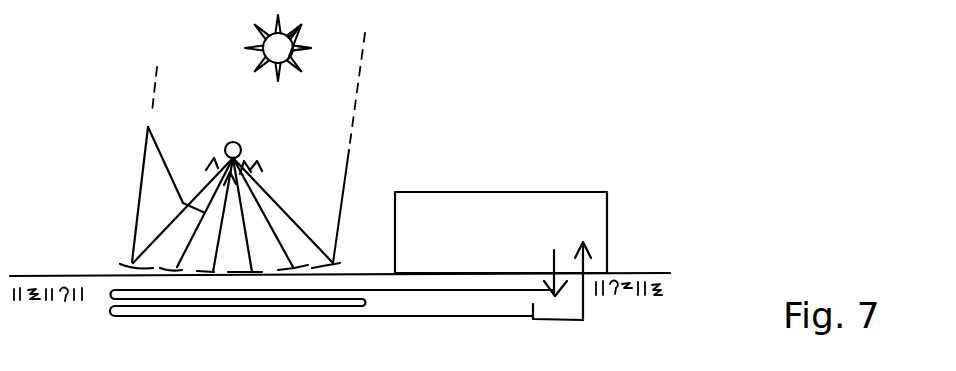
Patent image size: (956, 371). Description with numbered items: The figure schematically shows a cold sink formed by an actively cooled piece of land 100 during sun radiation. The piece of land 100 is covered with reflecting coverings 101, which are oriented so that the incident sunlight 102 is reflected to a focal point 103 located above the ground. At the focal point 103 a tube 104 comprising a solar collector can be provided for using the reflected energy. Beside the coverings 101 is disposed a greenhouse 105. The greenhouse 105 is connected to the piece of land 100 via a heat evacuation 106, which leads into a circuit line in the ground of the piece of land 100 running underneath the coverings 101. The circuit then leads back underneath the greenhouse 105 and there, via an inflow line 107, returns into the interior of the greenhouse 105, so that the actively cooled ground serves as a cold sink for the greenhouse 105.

The actively cooled piece of land 100 is at (570, 318).
The reflecting coverings 101 is at (147, 250).
The sunlight 102 is at (148, 127).
The focal point 103 is at (226, 143).
The tube 104 is at (243, 147).
The greenhouse 105 is at (585, 202).
The heat evacuation 106 is at (540, 257).
The inflow line 107 is at (593, 267).